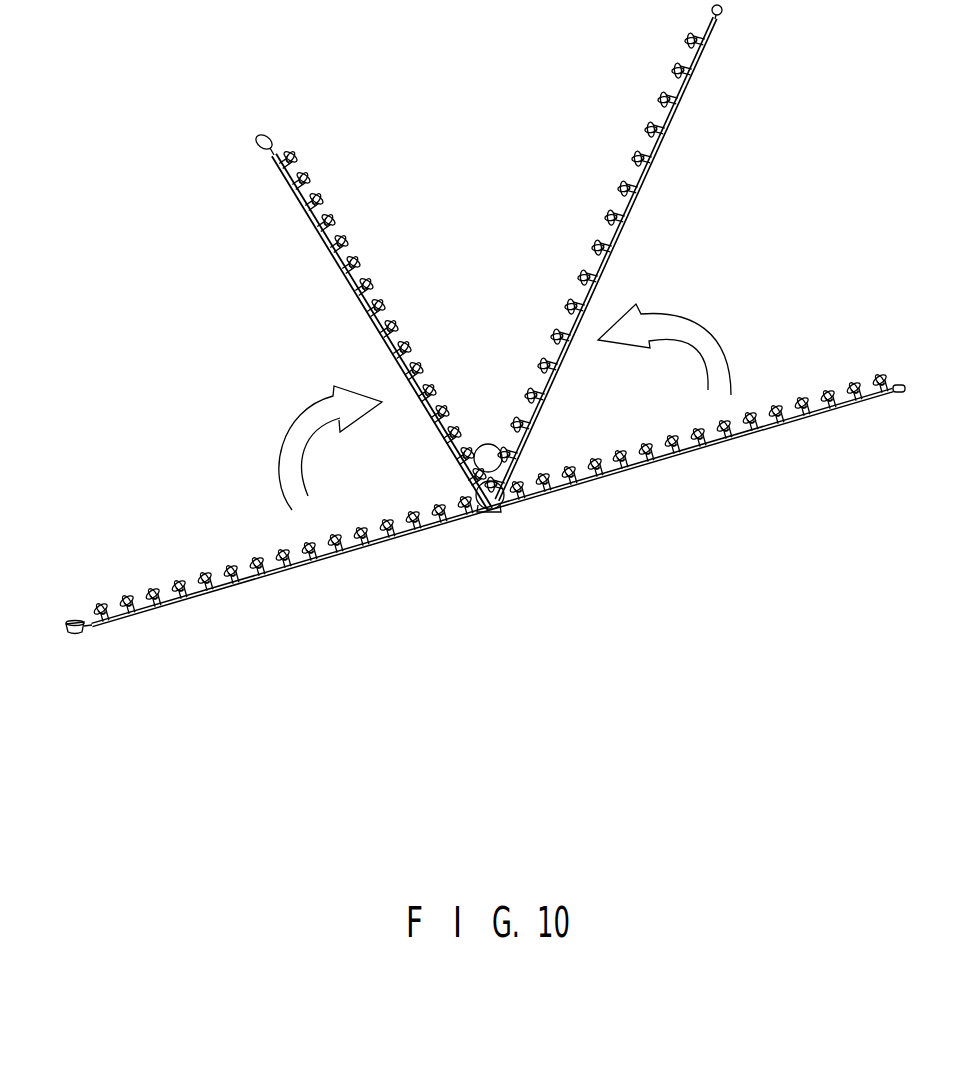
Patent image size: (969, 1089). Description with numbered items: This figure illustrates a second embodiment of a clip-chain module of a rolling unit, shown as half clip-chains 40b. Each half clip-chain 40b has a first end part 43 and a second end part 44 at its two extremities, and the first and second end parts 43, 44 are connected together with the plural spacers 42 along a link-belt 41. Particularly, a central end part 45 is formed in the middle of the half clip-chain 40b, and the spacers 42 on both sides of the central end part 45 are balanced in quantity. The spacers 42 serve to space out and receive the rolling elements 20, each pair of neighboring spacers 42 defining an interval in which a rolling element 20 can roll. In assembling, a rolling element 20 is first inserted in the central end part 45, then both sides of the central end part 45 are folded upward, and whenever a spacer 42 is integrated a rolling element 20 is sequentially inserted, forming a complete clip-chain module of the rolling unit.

The rolling element 20 is at (483, 445).
The half clip-chain 40b is at (350, 318).
The link-belt 41 is at (293, 192).
The spacer 42 is at (368, 287).
The first end part 43 is at (262, 148).
The second end part 44 is at (722, 12).
The central end part 45 is at (487, 513).